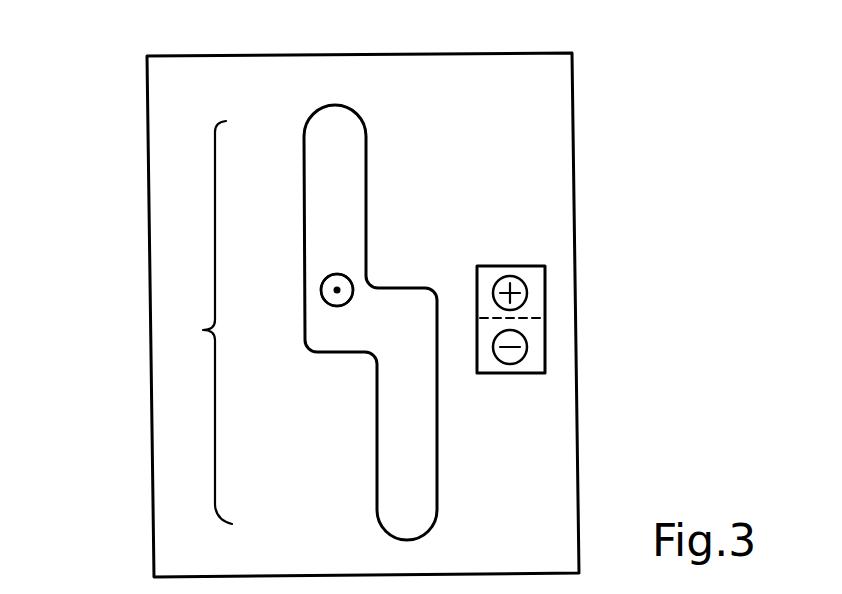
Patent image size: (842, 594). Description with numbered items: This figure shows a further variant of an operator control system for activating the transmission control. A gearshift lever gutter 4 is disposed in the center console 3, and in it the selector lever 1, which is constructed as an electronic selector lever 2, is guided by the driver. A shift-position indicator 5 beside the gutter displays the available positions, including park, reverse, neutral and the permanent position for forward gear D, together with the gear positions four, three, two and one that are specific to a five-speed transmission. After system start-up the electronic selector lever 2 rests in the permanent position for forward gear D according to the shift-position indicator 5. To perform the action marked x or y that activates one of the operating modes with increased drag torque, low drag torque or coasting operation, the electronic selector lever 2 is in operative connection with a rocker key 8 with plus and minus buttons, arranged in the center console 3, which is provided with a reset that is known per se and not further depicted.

The selector lever 1 is at (339, 275).
The electronic selector lever 2 is at (339, 275).
The center console 3 is at (543, 183).
The gearshift lever gutter 4 is at (344, 162).
The shift-position indicator 5 is at (203, 330).
The rocker key 8 is at (532, 305).